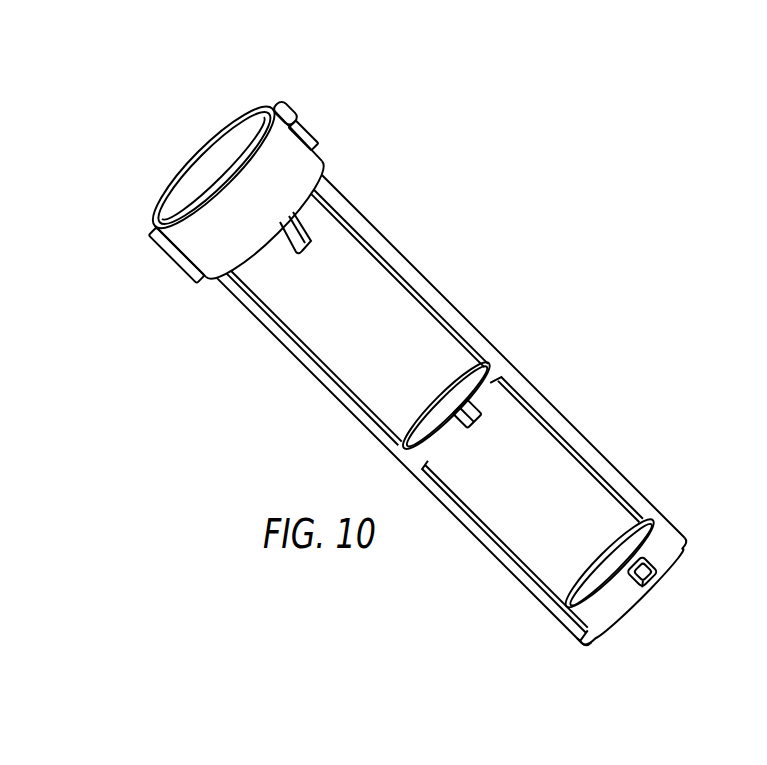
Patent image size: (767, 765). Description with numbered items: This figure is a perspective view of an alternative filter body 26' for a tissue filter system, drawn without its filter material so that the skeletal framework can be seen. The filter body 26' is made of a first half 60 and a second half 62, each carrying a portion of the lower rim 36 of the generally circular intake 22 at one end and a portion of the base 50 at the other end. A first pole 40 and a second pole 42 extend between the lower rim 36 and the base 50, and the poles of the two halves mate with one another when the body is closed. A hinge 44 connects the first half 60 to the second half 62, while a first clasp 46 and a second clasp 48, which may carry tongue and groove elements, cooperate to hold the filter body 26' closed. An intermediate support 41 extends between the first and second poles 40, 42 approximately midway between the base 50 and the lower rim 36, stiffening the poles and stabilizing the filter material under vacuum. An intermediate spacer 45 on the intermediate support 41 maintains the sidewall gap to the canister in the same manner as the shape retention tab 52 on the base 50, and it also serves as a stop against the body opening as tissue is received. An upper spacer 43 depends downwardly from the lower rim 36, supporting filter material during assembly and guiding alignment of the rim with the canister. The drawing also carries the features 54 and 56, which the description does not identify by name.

The intake 22 is at (200, 176).
The filter body 26' is at (564, 245).
The lower rim 36 is at (262, 244).
The first pole 40 is at (457, 317).
The intermediate support 41 is at (490, 384).
The second pole 42 is at (347, 399).
The upper spacer 43 is at (298, 226).
The hinge 44 is at (180, 265).
The intermediate spacer 45 is at (475, 408).
The first clasp 46 is at (296, 118).
The second clasp 48 is at (310, 138).
The base 50 is at (612, 604).
The shape retention tab 52 is at (657, 567).
The rim 54 is at (663, 522).
The corner edge 56 is at (575, 634).
The first half 60 is at (202, 176).
The second half 62 is at (238, 160).